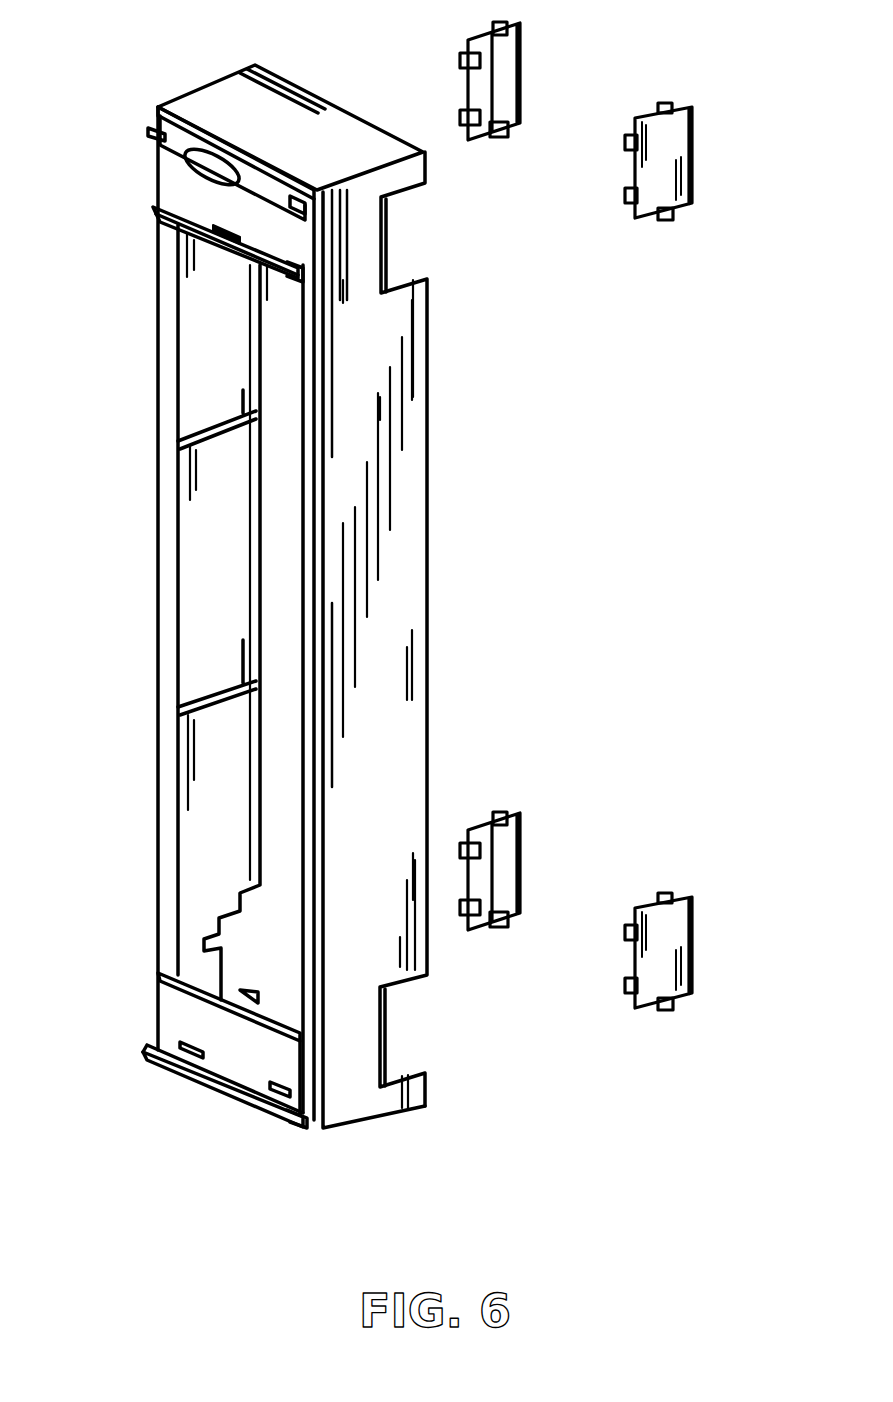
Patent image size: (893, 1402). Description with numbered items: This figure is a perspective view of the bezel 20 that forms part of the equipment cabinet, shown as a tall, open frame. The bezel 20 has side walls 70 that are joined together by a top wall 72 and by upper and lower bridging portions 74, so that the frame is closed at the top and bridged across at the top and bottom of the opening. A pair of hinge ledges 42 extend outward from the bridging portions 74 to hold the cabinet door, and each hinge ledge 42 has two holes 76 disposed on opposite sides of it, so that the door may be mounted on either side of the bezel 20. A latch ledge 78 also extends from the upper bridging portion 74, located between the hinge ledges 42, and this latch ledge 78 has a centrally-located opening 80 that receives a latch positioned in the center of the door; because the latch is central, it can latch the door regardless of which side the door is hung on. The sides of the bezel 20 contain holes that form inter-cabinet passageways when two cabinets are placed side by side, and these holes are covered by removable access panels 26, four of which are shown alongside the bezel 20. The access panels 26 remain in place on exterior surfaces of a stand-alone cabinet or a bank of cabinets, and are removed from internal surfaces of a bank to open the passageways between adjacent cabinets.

The bezel 20 is at (92, 38).
The access panel 26 is at (523, 55).
The hinge ledge 42 is at (150, 133).
The side wall 70 is at (210, 547).
The top wall 72 is at (347, 133).
The bridging portion 74 is at (183, 180).
The hole 76 is at (310, 187).
The latch ledge 78 is at (177, 233).
The opening 80 is at (240, 228).